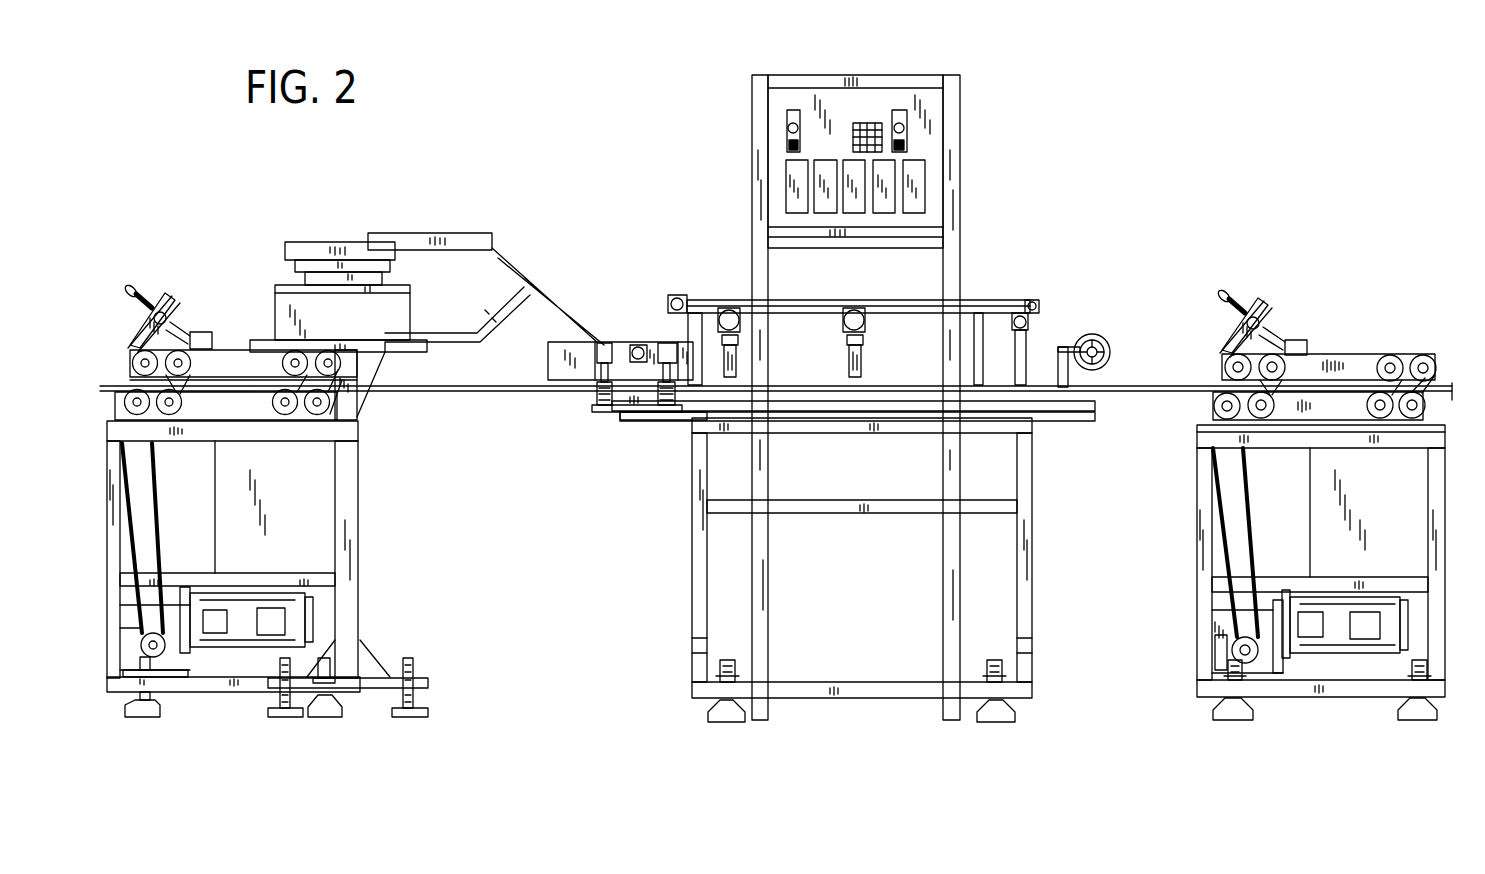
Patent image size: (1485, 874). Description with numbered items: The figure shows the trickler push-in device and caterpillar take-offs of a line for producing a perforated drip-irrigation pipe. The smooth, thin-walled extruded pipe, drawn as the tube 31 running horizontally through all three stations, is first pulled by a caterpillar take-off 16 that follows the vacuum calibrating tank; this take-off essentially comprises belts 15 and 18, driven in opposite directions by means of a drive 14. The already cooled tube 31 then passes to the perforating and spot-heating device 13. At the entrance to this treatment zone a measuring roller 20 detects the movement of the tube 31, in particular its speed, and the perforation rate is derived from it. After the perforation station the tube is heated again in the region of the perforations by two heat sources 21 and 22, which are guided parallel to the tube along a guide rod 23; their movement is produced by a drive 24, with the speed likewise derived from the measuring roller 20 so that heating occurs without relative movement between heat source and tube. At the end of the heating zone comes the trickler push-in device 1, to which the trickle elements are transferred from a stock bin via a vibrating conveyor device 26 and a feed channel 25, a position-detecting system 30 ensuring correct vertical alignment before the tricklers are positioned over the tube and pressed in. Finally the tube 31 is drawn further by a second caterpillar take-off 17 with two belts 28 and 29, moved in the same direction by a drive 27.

The trickler push-in device 1 is at (627, 383).
The perforating and spot-heating device 13 is at (853, 398).
The drive 14 is at (1217, 650).
The belt 15 is at (1378, 355).
The caterpillar take-off 16 is at (1313, 377).
The caterpillar take-off 17 is at (225, 365).
The belt 18 is at (1332, 423).
The measuring roller 20 is at (1097, 336).
The heat source 21 is at (847, 372).
The heat source 22 is at (720, 303).
The guide rod 23 is at (972, 317).
The drive 24 is at (673, 295).
The feed channel 25 is at (547, 293).
The vibrating conveyor device 26 is at (332, 315).
The drive 27 is at (167, 660).
The belt 28 is at (248, 348).
The belt 29 is at (233, 415).
The sensor 30 is at (642, 362).
The tube 31 is at (447, 393).